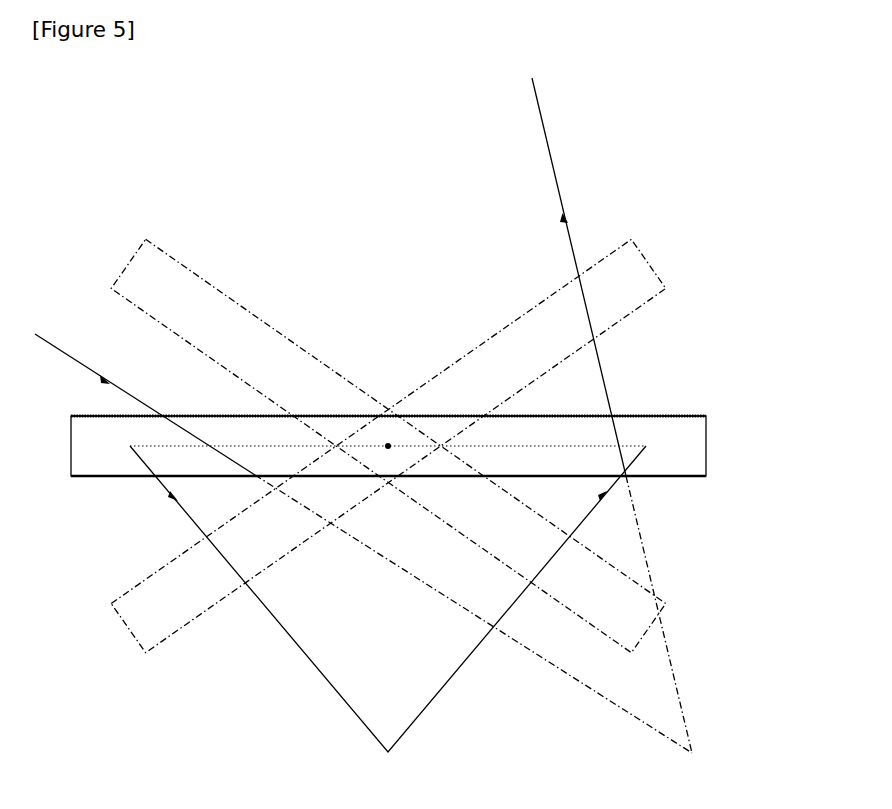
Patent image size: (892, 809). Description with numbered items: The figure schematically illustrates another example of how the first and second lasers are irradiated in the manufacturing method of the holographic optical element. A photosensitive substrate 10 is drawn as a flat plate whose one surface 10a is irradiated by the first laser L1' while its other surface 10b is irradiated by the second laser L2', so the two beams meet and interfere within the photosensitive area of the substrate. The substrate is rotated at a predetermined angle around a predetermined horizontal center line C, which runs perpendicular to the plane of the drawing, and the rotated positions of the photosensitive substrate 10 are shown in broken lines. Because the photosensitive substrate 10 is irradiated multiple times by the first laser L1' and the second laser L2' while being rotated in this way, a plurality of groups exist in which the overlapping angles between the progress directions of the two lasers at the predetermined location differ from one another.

The photosensitive substrate 10 is at (660, 260).
The one surface of the photosensitive substrate 10a is at (692, 478).
The another surface of the photosensitive substrate 10b is at (690, 414).
The horizontal center line C is at (388, 442).
The first laser L1' is at (363, 543).
The second laser L2' is at (612, 415).